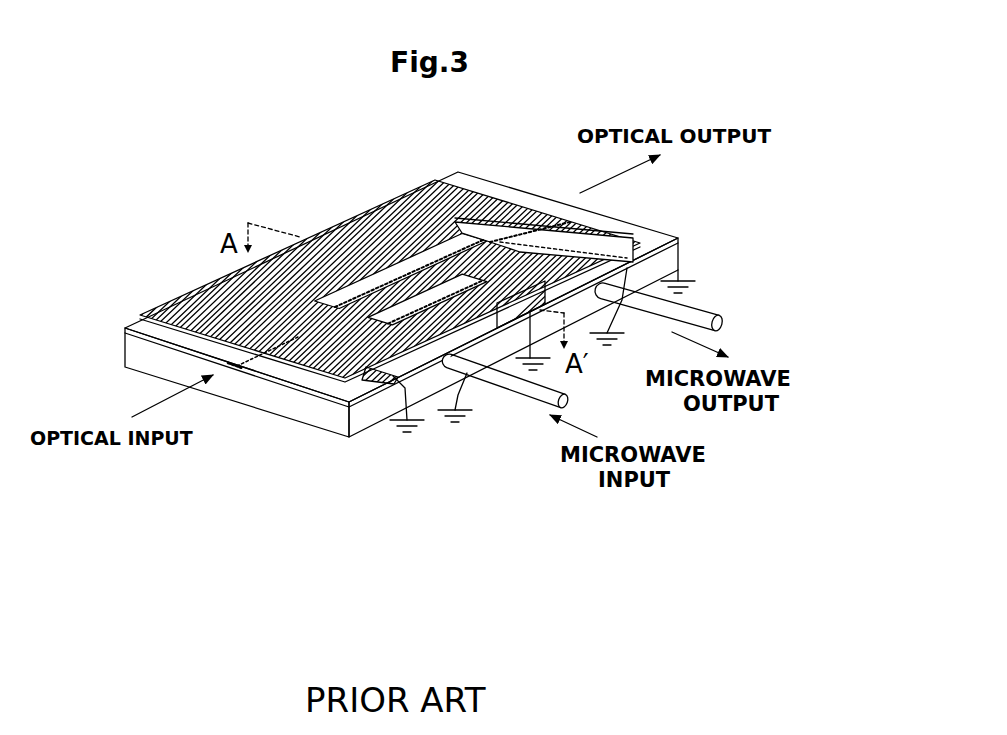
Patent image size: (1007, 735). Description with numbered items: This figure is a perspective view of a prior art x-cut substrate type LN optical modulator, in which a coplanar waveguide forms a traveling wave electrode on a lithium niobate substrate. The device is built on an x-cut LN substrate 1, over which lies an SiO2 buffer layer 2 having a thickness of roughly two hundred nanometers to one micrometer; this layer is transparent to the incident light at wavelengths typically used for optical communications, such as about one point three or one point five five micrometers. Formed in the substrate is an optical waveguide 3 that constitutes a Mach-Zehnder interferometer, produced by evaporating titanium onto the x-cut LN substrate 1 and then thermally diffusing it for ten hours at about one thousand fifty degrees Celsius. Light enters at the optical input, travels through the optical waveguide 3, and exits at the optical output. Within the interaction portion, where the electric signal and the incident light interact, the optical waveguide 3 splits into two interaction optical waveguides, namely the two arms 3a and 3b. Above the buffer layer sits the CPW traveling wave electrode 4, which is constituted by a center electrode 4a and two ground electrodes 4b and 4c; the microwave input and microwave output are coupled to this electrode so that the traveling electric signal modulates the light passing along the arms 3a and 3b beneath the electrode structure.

The x-cut LN substrate 1 is at (138, 355).
The SiO2 buffer layer 2 is at (140, 324).
The optical waveguide 3 is at (232, 372).
The arm 3a is at (440, 248).
The arm 3b is at (510, 245).
The CPW traveling wave electrode 4 is at (449, 245).
The center electrode 4a is at (340, 250).
The ground electrode 4b is at (295, 247).
The ground electrode 4c is at (312, 262).